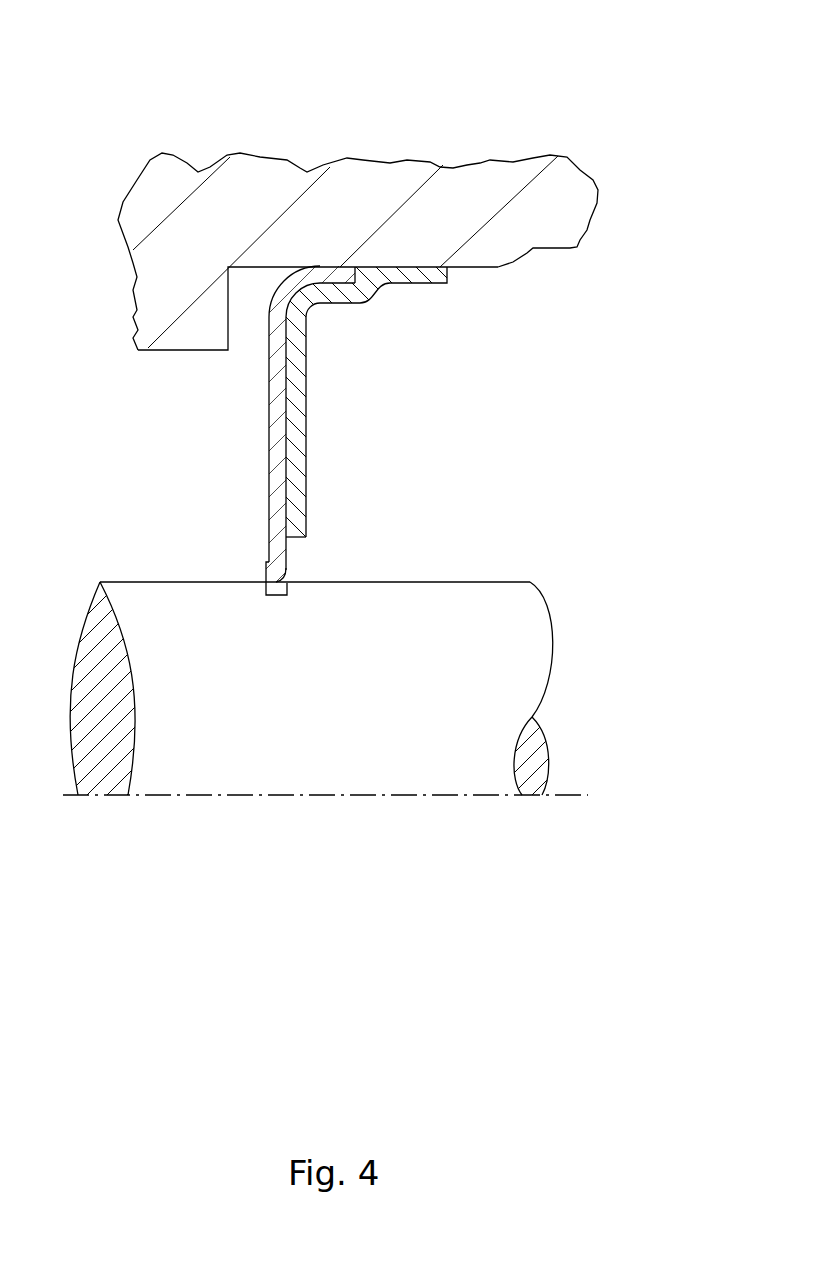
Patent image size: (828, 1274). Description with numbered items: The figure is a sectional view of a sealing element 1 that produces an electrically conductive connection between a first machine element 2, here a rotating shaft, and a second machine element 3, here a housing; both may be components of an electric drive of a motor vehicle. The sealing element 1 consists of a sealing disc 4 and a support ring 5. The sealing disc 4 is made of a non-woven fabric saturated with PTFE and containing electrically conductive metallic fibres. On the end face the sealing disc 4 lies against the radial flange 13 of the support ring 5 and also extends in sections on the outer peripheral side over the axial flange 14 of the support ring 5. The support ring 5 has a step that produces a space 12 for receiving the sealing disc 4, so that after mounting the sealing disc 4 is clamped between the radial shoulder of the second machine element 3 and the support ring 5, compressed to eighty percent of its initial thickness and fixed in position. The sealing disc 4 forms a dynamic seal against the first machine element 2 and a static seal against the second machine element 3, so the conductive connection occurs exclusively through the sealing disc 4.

The sealing element 1 is at (512, 336).
The first machine element 2 is at (453, 737).
The second machine element 3 is at (448, 222).
The sealing disc 4 is at (270, 493).
The support ring 5 is at (298, 498).
The space 12 is at (365, 267).
The radial flange 13 is at (297, 379).
The axial flange 14 is at (440, 267).